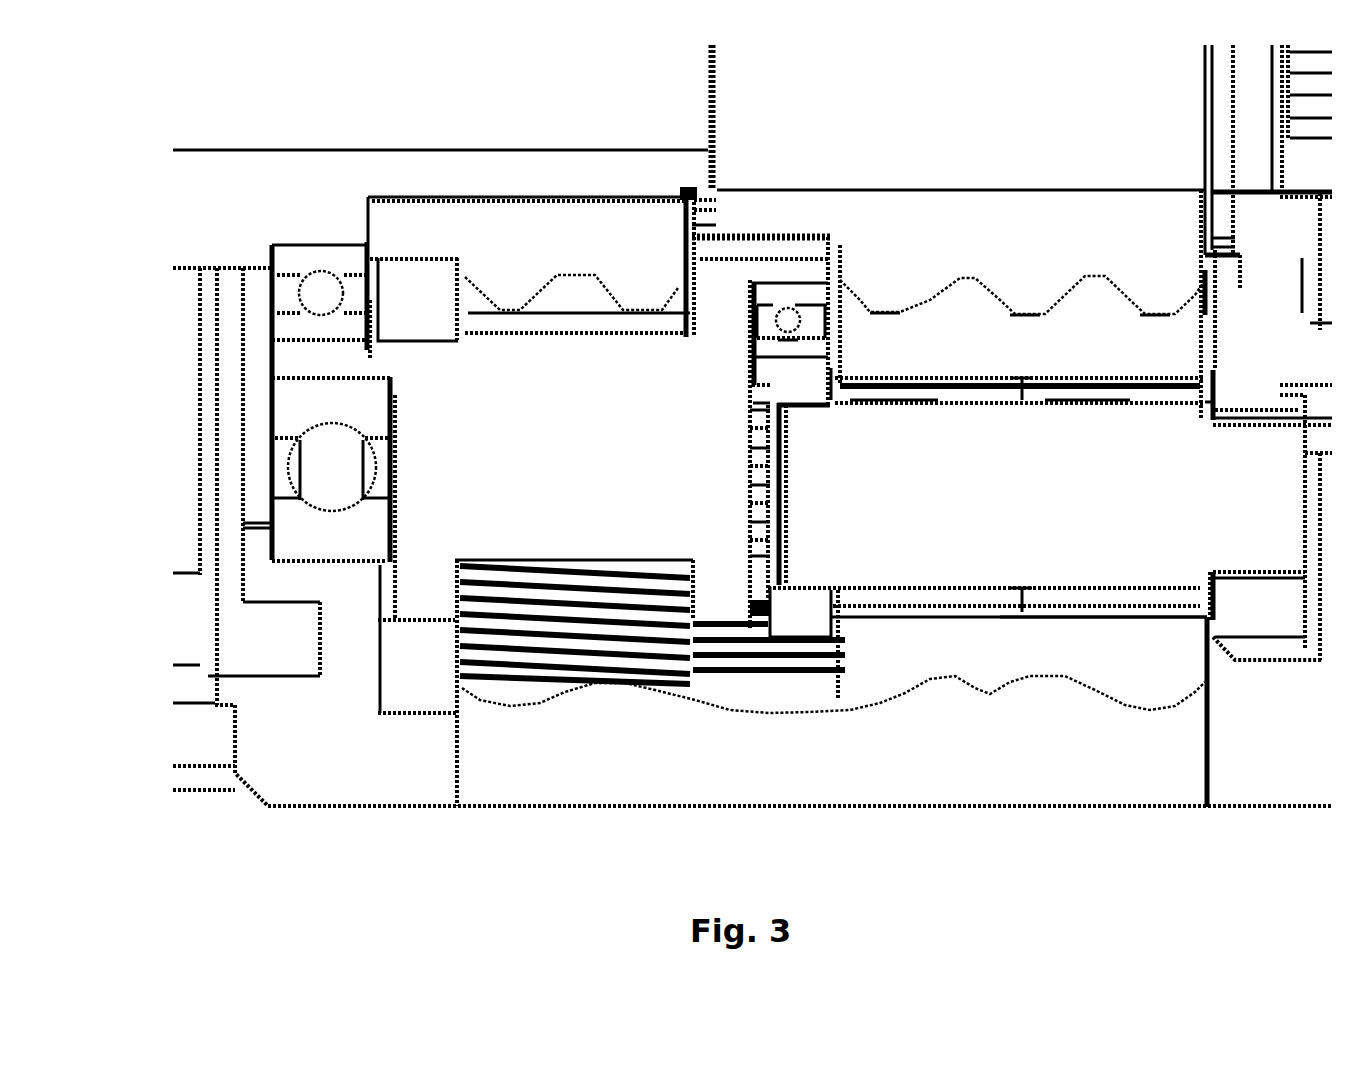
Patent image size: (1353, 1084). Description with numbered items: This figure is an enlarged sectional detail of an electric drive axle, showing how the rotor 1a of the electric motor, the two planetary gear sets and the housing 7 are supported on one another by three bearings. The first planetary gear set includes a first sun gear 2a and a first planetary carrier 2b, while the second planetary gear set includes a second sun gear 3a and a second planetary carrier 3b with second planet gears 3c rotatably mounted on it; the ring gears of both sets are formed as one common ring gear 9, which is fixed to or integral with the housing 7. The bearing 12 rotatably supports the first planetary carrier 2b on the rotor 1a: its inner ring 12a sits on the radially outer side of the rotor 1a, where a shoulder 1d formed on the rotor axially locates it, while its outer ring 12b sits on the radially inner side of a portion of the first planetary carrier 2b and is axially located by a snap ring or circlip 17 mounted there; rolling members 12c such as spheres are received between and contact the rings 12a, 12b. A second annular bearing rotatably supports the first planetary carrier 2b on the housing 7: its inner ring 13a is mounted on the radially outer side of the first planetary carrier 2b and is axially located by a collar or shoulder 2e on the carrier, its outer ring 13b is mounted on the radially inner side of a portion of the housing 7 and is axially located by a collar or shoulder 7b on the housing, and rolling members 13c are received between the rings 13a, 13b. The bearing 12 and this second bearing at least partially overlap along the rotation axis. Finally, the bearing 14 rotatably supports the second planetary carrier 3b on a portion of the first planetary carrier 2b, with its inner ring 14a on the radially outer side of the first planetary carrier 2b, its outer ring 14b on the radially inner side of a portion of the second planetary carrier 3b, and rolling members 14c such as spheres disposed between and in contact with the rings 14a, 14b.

The rotor 1a is at (306, 212).
The shoulder 1d is at (268, 257).
The first sun gear 2a is at (568, 256).
The first planetary carrier 2b is at (594, 483).
The collar or shoulder 2e is at (398, 417).
The second sun gear 3a is at (1047, 249).
The second planetary carrier 3b is at (999, 510).
The second planet gears 3c is at (1108, 357).
The housing 7 is at (350, 749).
The collar or shoulder 7b is at (238, 565).
The common ring gear 9 is at (652, 787).
The bearing 12 is at (392, 235).
The inner ring 12a is at (291, 258).
The outer ring 12b is at (284, 323).
The rolling members 12c is at (322, 282).
The inner ring 13a is at (293, 403).
The outer ring 13b is at (290, 530).
The rolling members 13c is at (352, 462).
The bearing 14 is at (846, 246).
The inner ring 14a is at (807, 287).
The outer ring 14b is at (810, 354).
The rolling members 14c is at (787, 318).
The snap ring or circlip 17 is at (384, 352).